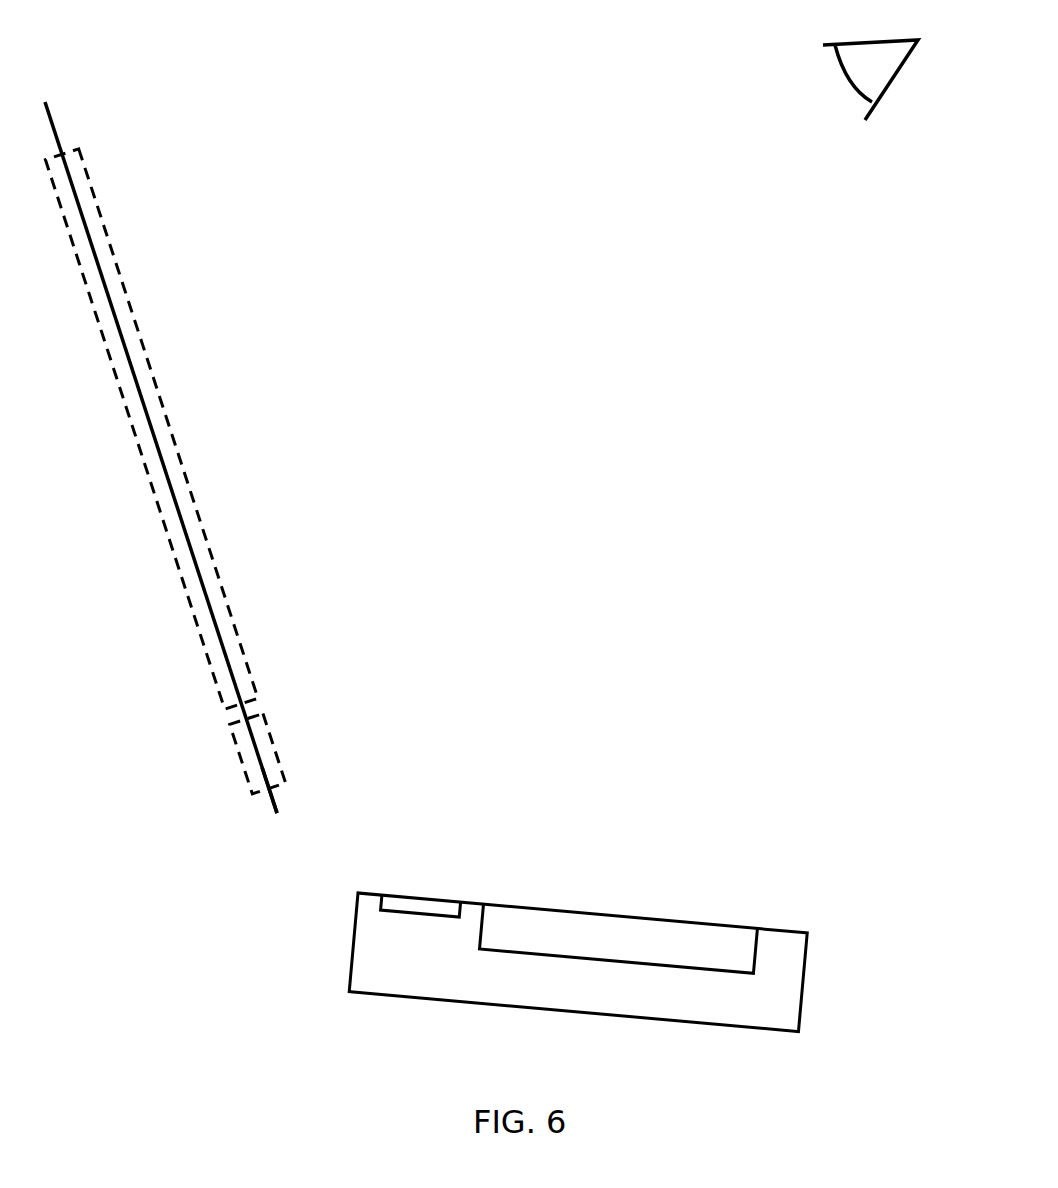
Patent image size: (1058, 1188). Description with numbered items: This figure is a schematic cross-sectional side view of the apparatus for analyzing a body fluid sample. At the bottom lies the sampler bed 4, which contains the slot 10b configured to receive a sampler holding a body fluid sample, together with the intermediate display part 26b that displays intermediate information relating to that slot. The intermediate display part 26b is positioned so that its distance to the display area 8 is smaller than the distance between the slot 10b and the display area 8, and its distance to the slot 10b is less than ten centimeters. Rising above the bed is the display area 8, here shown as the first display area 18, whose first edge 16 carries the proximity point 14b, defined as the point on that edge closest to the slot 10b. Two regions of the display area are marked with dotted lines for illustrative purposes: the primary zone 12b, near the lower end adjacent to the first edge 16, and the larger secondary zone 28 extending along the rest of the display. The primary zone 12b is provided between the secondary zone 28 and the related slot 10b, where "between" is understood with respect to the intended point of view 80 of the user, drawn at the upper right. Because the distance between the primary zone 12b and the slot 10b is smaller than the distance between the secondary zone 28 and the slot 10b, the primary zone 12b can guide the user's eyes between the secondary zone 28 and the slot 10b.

The sampler bed 4 is at (807, 978).
The display area 8 is at (177, 457).
The first display area 18 is at (118, 317).
The slot 10b is at (682, 918).
The primary zone 12b is at (272, 738).
The proximity point 14b is at (183, 832).
The first edge 16 is at (277, 813).
The intermediate display part 26b is at (427, 898).
The secondary zone 28 is at (90, 175).
The point of view 80 is at (892, 83).